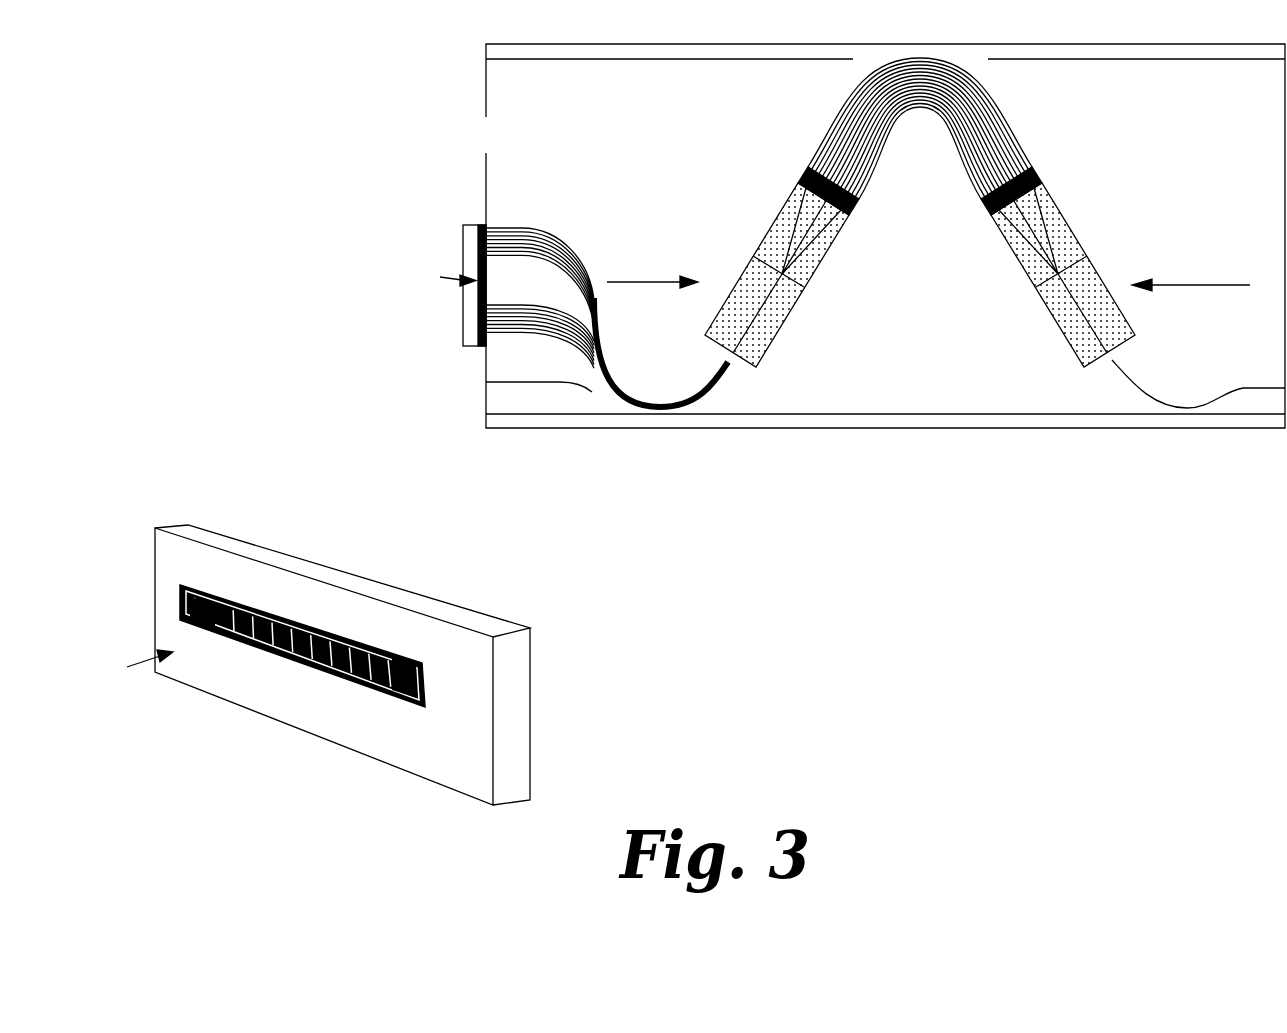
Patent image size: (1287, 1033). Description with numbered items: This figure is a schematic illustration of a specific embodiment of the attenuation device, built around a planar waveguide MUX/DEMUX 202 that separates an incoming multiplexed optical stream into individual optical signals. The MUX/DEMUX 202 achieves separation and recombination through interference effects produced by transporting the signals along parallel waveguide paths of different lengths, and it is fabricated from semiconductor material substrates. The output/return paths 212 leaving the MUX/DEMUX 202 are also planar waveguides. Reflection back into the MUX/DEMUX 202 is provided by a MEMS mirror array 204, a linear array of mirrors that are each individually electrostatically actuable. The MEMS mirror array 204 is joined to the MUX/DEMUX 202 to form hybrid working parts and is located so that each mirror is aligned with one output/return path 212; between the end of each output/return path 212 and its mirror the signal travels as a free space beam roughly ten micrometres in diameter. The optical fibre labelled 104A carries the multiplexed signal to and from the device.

The optical fiber 104A is at (939, 233).
The planar waveguide MUX/DEMUX 202 is at (977, 414).
The MEMS mirror array 204 is at (465, 347).
The output/return path 212 is at (522, 345).